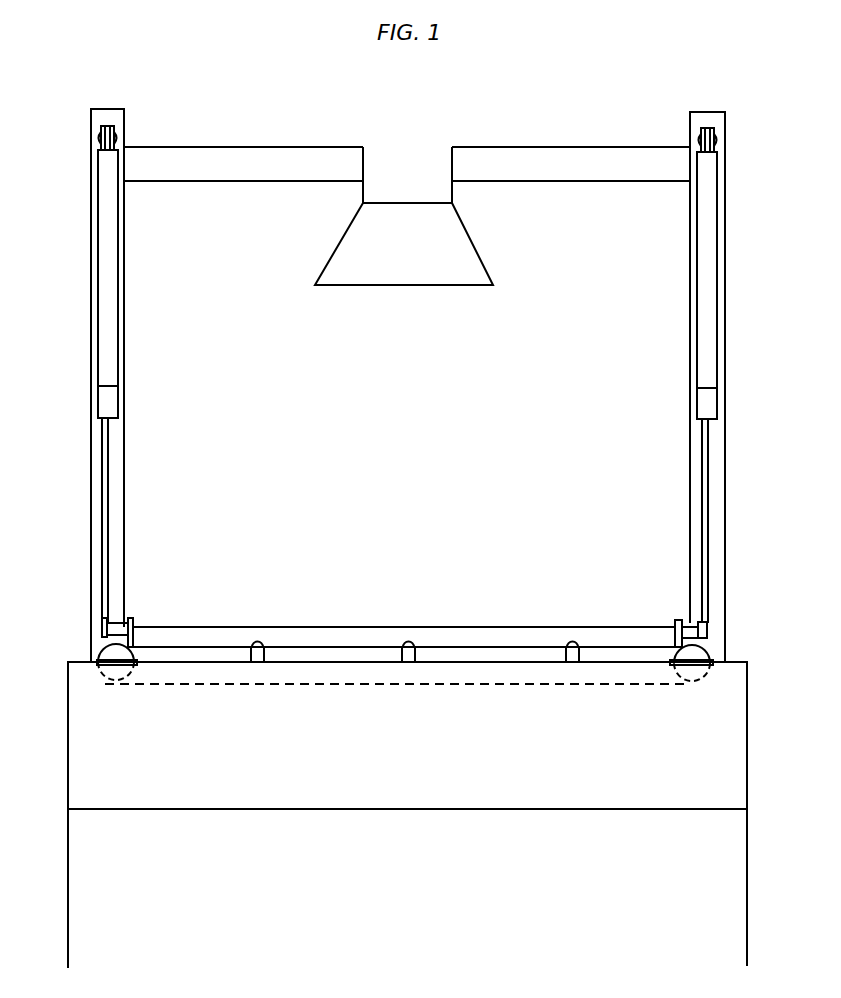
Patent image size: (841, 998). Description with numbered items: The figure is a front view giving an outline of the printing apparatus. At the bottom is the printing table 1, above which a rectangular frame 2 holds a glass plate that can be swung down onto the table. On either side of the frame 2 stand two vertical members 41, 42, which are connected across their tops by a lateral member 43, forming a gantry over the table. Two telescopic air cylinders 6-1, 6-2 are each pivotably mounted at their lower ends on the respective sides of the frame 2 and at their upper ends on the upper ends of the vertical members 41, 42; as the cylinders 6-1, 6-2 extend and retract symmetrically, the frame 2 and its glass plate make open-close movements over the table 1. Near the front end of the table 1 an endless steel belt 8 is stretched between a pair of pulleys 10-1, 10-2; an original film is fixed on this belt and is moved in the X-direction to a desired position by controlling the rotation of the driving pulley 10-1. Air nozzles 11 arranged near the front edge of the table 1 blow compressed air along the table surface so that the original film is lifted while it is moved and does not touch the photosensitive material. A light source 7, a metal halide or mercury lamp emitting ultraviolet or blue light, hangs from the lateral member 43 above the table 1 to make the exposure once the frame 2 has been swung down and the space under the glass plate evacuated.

The printing table 1 is at (236, 655).
The rectangular frame 2 is at (303, 640).
The light source 7 is at (448, 253).
The endless steel belt 8 is at (283, 686).
The air nozzles 11 is at (410, 641).
The vertical member 41 is at (725, 340).
The vertical member 42 is at (91, 338).
The lateral member 43 is at (240, 152).
The telescopic air cylinder 6-1 is at (708, 290).
The telescopic air cylinder 6-2 is at (107, 262).
The driving pulley 10-1 is at (690, 672).
The pulley 10-2 is at (105, 680).